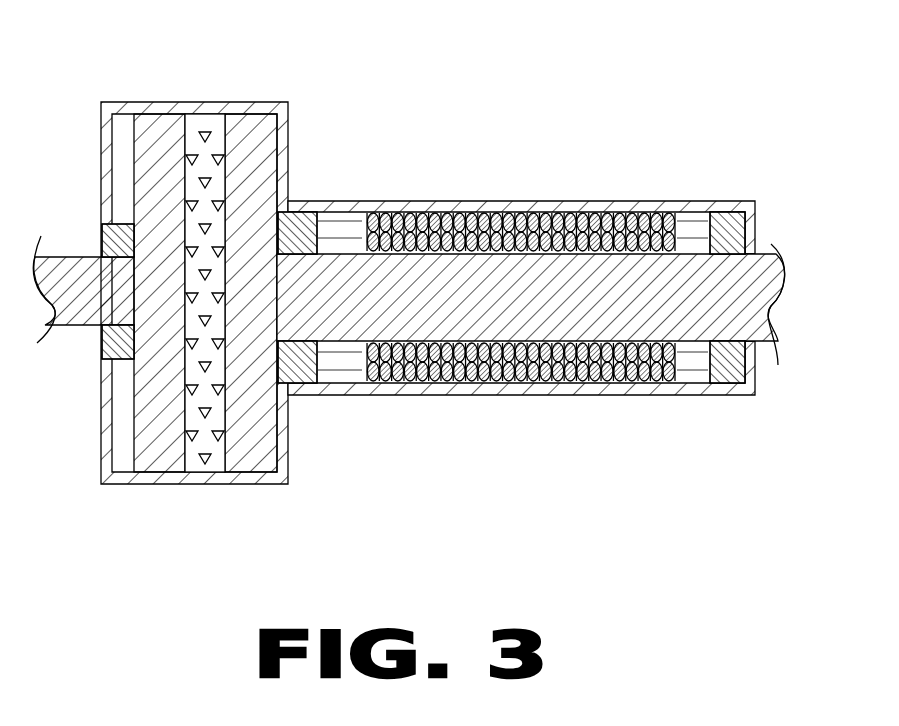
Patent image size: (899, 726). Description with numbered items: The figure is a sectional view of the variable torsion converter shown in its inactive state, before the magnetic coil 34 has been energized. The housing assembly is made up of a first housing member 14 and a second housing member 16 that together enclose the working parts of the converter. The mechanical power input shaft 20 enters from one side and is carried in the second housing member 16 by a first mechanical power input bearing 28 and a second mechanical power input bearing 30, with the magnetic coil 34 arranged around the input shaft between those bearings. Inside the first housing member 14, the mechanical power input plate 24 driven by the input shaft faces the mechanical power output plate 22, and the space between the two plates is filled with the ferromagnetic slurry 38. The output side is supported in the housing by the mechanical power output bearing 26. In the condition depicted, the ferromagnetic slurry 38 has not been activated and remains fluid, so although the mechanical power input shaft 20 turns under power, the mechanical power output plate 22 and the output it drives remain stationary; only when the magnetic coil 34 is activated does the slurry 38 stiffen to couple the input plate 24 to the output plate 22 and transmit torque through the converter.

The first housing member 14 is at (211, 103).
The second housing member 16 is at (755, 386).
The mechanical power input shaft 20 is at (773, 291).
The mechanical power output plate 22 is at (157, 210).
The mechanical power input plate 24 is at (256, 166).
The mechanical power output bearing 26 is at (108, 349).
The first mechanical power input bearing 28 is at (293, 368).
The second mechanical power input bearing 30 is at (692, 358).
The magnetic coil 34 is at (650, 218).
The ferromagnetic slurry 38 is at (207, 462).